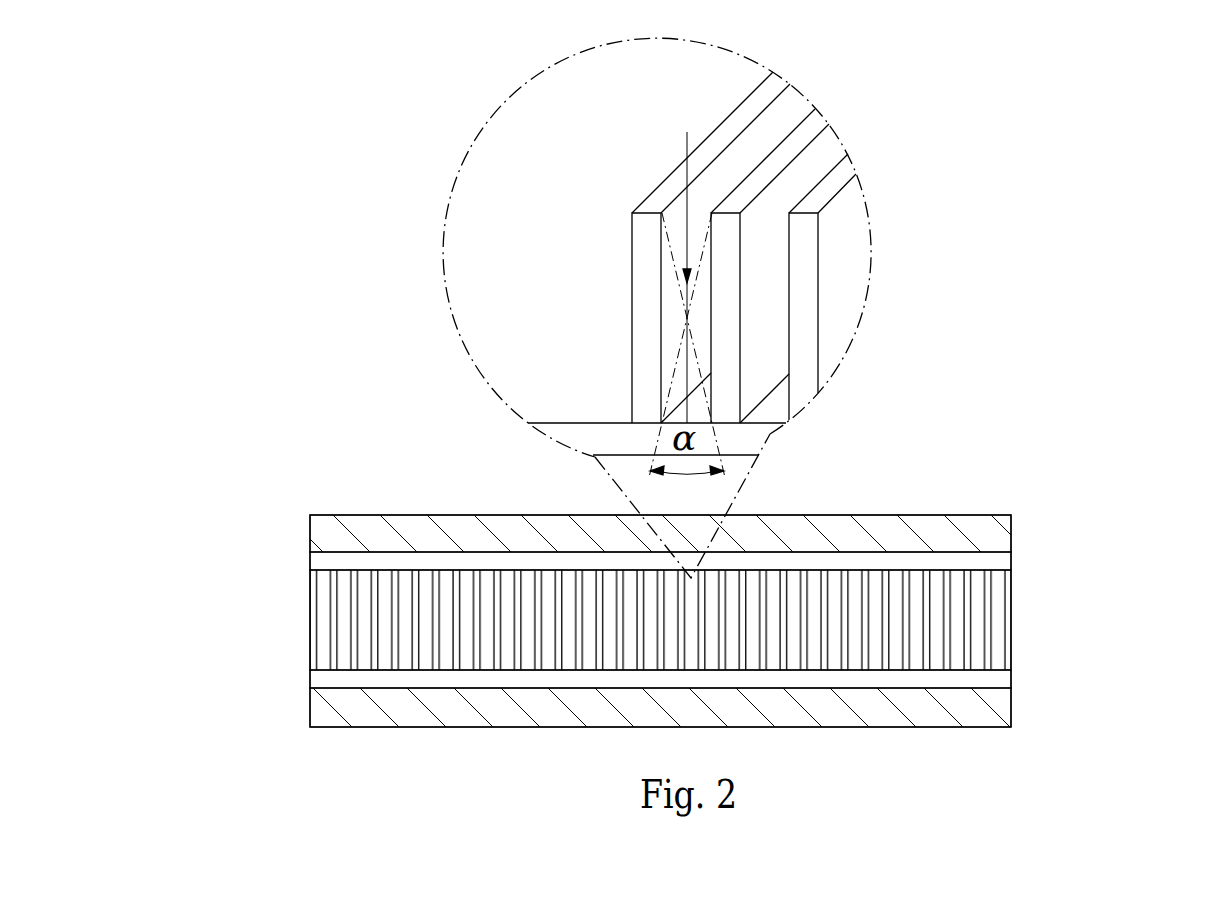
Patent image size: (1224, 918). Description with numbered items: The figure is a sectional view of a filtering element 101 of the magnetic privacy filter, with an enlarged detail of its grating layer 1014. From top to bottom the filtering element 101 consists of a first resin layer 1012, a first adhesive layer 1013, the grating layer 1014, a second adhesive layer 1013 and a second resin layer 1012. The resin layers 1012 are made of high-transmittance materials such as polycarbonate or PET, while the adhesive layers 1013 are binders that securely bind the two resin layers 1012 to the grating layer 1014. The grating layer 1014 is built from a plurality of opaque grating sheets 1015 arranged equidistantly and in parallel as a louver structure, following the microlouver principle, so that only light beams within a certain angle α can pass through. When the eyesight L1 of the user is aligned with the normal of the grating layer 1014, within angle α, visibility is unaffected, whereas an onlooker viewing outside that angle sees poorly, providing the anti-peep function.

The filtering element 101 is at (1030, 510).
The resin layer 1012 is at (323, 528).
The adhesive layer 1013 is at (1013, 562).
The grating layer 1014 is at (323, 622).
The grating sheet 1015 is at (643, 347).
The eyesight of the user L1 is at (687, 260).